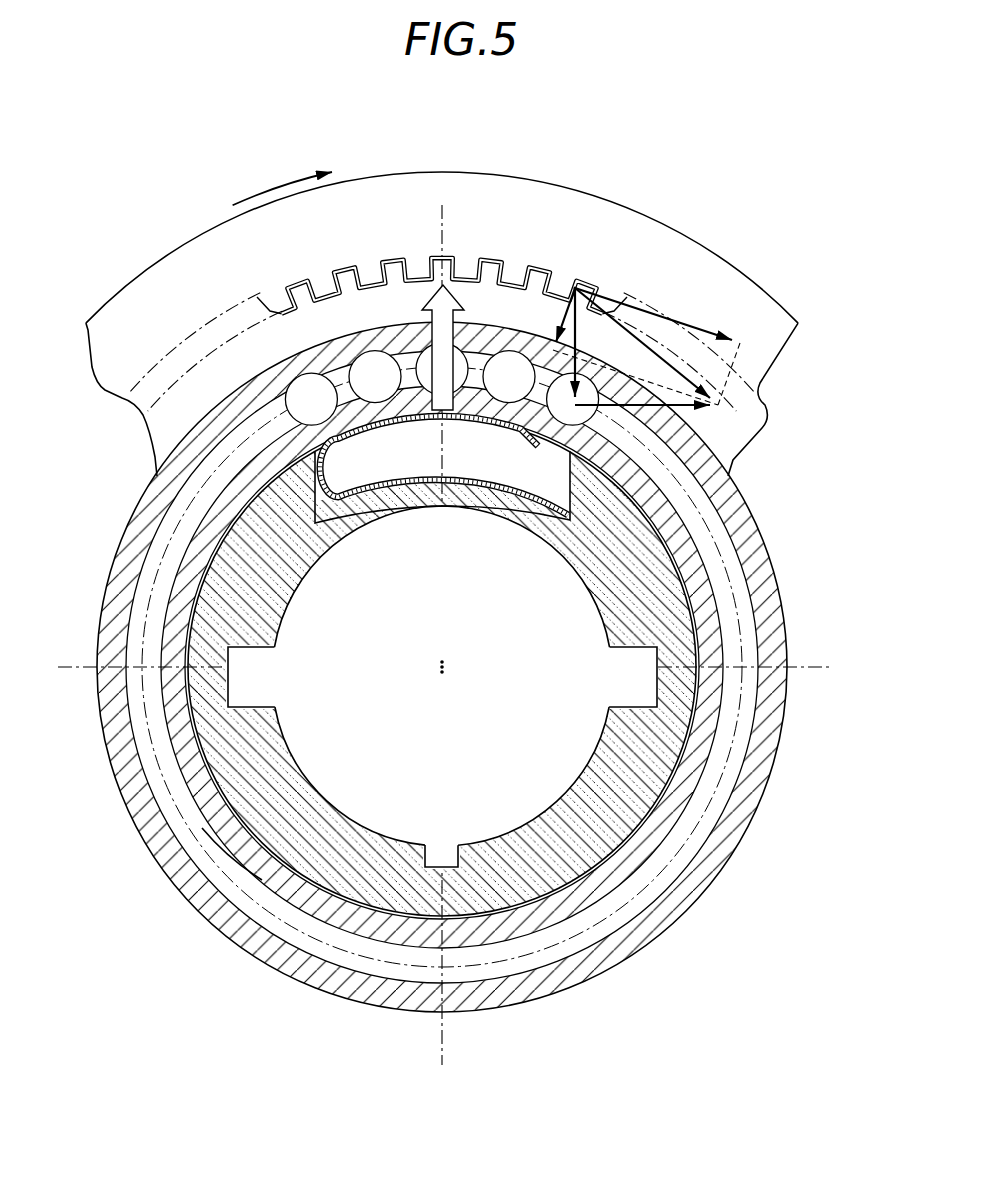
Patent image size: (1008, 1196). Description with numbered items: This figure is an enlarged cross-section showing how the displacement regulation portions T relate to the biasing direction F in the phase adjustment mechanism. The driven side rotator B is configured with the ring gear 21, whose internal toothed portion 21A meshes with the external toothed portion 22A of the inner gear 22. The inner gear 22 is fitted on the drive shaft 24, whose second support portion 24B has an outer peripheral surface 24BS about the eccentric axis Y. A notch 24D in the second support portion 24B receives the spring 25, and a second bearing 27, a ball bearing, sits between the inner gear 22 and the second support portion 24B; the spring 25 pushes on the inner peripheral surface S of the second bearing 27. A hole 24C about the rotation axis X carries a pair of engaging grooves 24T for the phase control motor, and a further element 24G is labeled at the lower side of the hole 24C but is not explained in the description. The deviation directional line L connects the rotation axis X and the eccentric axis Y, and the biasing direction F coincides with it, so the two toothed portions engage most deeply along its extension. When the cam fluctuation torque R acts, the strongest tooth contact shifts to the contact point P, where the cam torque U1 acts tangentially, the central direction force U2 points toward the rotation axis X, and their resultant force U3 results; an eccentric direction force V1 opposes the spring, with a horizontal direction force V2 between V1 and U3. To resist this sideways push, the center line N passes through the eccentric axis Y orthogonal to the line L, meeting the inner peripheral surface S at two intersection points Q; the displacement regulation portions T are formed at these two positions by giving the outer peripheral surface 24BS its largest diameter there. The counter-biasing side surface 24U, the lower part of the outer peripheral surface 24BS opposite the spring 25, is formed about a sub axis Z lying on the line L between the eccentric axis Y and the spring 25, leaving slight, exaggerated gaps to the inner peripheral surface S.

The ring gear 21 is at (442, 324).
The internal toothed portion 21A is at (322, 285).
The inner gear 22 is at (245, 353).
The external toothed portion 22A is at (435, 254).
The drive shaft 24 is at (513, 665).
The second support portion 24B is at (513, 665).
The outer peripheral surface 24BS is at (258, 492).
The counter-biasing side surface 24U is at (400, 696).
The hole 24C is at (522, 737).
The notch 24D is at (470, 468).
The groove 24G is at (455, 845).
The engaging grooves 24T is at (247, 708).
The spring 25 is at (388, 415).
The second bearing 27 is at (215, 896).
The driven side rotator B is at (442, 324).
The biasing direction F is at (428, 299).
The deviation directional line L is at (447, 247).
The center line N is at (473, 667).
The contact point P is at (575, 286).
The intersection points Q is at (175, 652).
The cam fluctuation torque R is at (282, 186).
The inner peripheral surface S is at (276, 851).
The displacement regulation portions T is at (696, 661).
The cam torque U1 is at (724, 335).
The central direction force U2 is at (552, 334).
The resultant force U3 is at (673, 363).
The eccentric direction force V1 is at (603, 342).
The horizontal direction force V2 is at (712, 409).
The rotation axis X is at (441, 673).
The eccentric axis Y is at (444, 667).
The sub axis Z is at (440, 661).